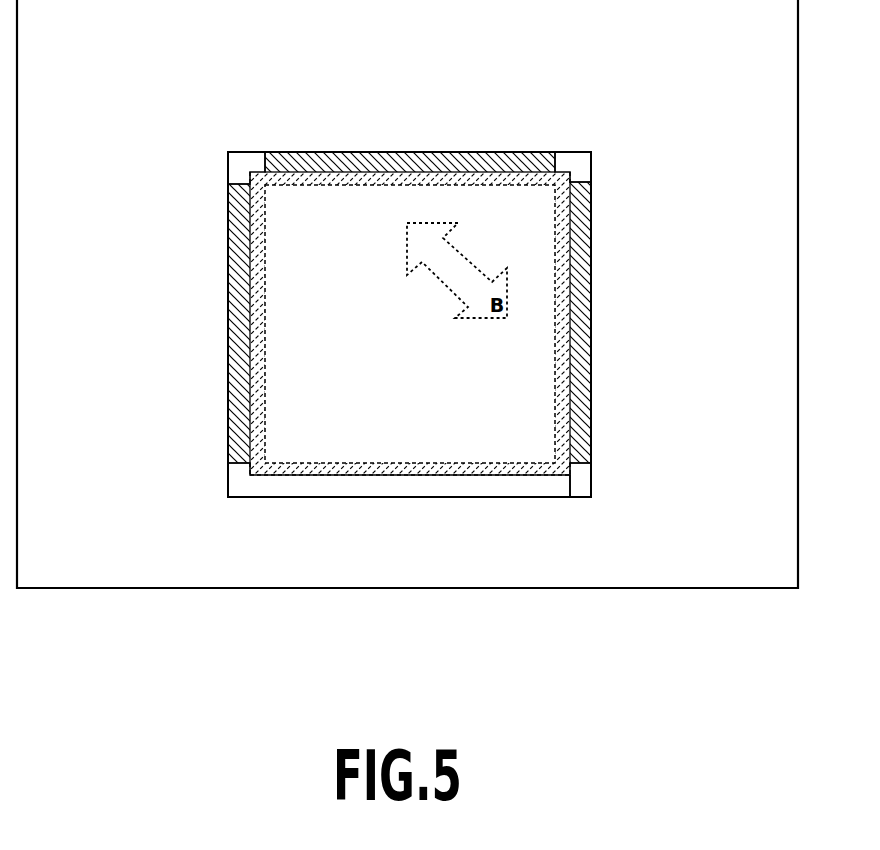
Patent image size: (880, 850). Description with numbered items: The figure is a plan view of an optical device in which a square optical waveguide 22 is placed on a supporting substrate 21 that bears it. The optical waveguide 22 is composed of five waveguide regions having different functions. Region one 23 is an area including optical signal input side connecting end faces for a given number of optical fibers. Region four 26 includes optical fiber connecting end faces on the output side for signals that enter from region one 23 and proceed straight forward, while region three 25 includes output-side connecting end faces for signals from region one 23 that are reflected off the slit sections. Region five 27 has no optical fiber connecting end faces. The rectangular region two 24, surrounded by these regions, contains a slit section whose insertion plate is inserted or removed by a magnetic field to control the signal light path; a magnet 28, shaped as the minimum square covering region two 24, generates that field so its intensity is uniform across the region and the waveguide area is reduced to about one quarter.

The supporting substrate 21 is at (798, 233).
The optical waveguide 22 is at (428, 150).
The region 1 23 is at (248, 181).
The region 2 24 is at (264, 300).
The region 3 25 is at (556, 160).
The region 4 26 is at (580, 470).
The region 5 27 is at (470, 488).
The magnet 28 is at (566, 227).